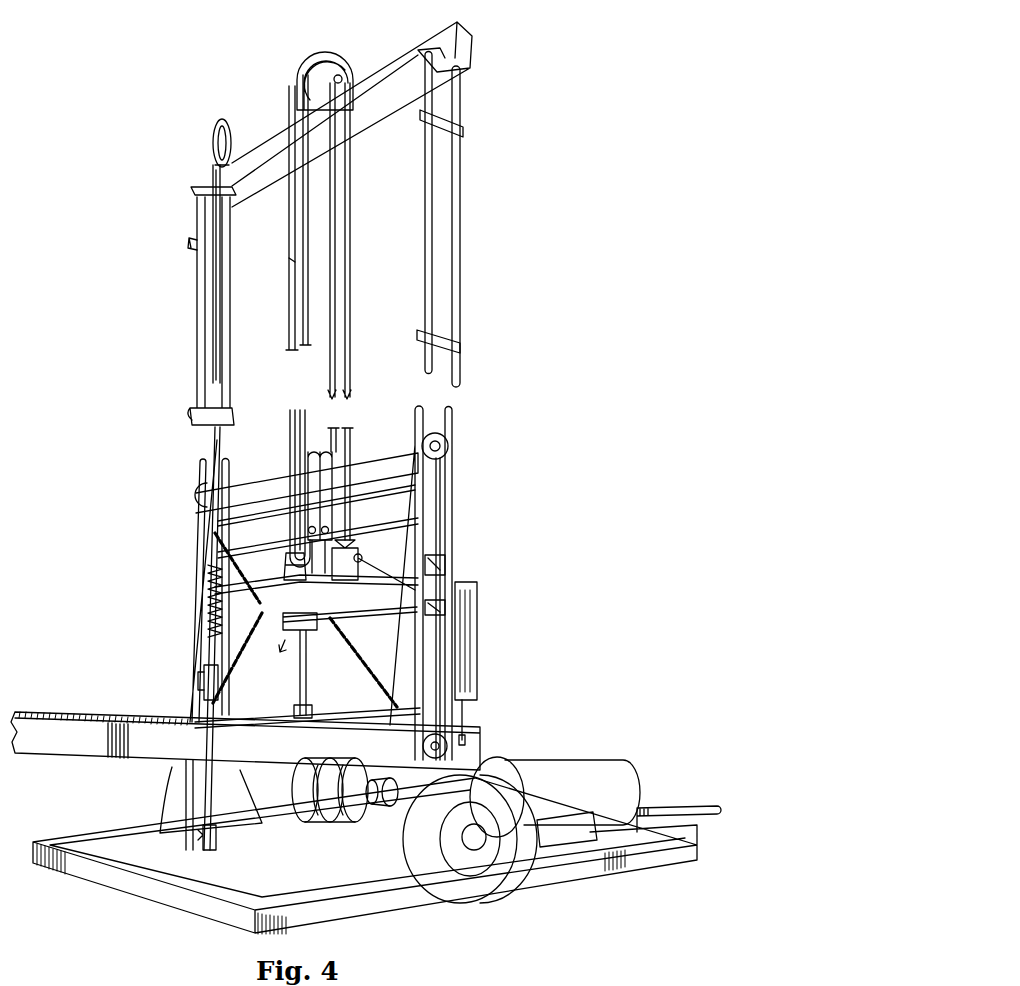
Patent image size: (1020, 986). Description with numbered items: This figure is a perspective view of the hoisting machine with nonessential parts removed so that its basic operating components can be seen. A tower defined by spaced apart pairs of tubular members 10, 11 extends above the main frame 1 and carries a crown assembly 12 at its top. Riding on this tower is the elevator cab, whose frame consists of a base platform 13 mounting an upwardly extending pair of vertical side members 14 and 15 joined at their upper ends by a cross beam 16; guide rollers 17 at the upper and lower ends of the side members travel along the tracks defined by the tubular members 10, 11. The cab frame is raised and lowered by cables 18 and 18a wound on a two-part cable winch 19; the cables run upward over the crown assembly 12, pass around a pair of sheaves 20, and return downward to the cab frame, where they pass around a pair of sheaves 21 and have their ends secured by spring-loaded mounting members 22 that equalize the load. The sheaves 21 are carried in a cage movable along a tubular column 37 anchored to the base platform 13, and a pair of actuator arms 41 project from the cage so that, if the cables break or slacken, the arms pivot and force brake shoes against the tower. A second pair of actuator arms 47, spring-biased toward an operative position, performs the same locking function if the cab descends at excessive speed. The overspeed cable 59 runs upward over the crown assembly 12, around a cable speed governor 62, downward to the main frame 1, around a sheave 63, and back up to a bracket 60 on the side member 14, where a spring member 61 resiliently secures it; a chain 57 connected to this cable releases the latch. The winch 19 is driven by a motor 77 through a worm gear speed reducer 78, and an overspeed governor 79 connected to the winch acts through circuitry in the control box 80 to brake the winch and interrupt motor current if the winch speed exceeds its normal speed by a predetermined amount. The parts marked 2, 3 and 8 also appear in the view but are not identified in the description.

The main frame 1 is at (540, 873).
The wheel 2 is at (475, 902).
The tow bar 3 is at (712, 805).
The power unit 8 is at (515, 741).
The tubular members 10 is at (455, 248).
The tubular members 11 is at (424, 262).
The crown assembly 12 is at (385, 68).
The base platform 13 is at (120, 772).
The vertical side member 14 is at (195, 652).
The vertical side member 15 is at (409, 652).
The cross beam 16 is at (363, 474).
The guide rollers 17 is at (441, 446).
The cable 18 is at (351, 433).
The cable 18a is at (291, 258).
The two-part cable winch 19 is at (331, 431).
The sheaves 20 is at (333, 62).
The sheaves 21 is at (285, 568).
The mounting members 22 is at (333, 505).
The tubular column 37 is at (298, 667).
The actuator arms 41 is at (366, 578).
The actuator arms 47 is at (252, 623).
The chain 57 is at (221, 547).
The overspeed cable 59 is at (221, 242).
The bracket 60 is at (203, 685).
The spring member 61 is at (208, 594).
The cable speed governor 62 is at (225, 118).
The sheave 63 is at (216, 840).
The motor 77 is at (598, 762).
The worm gear speed reducer 78 is at (510, 783).
The overspeed governor 79 is at (387, 800).
The control box 80 is at (476, 641).